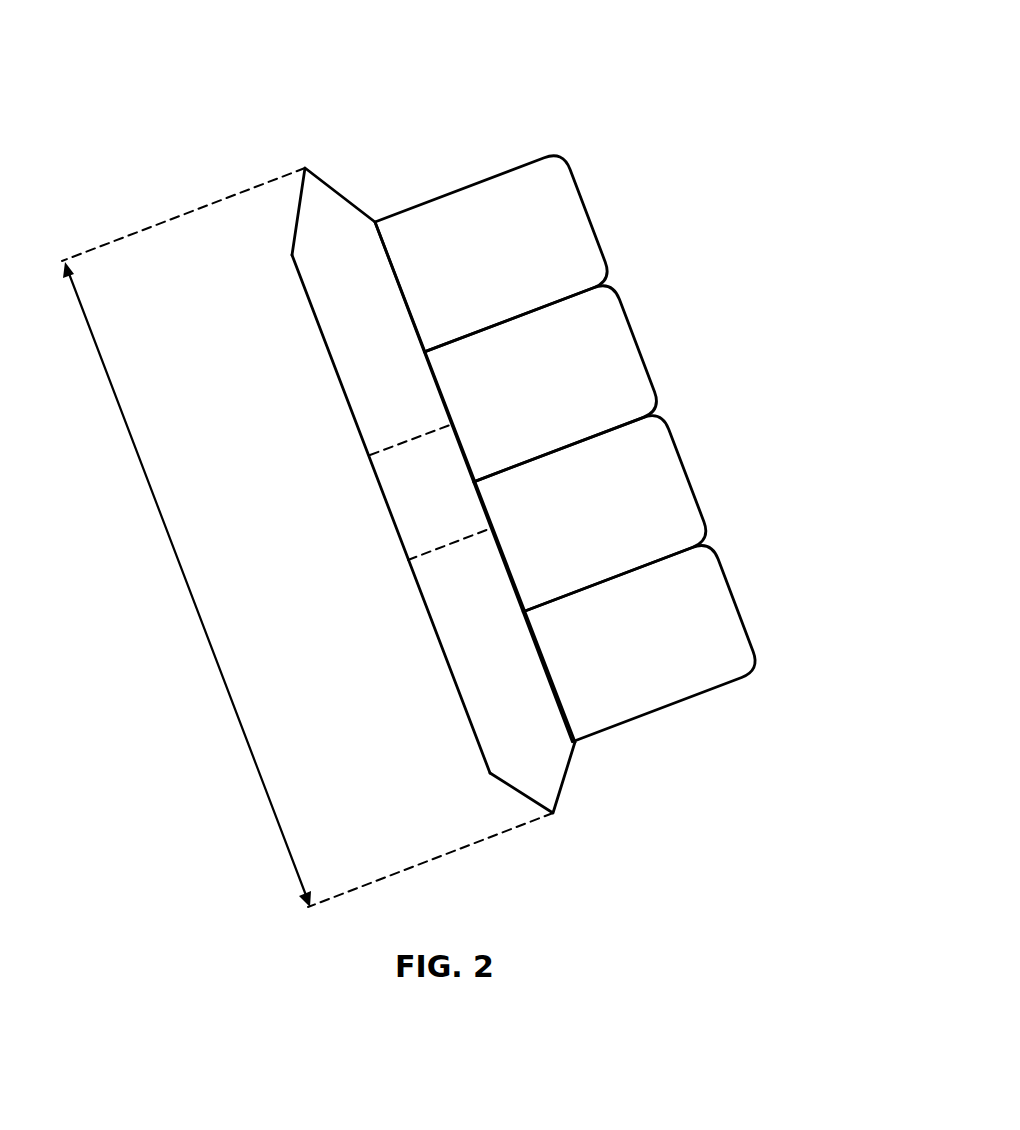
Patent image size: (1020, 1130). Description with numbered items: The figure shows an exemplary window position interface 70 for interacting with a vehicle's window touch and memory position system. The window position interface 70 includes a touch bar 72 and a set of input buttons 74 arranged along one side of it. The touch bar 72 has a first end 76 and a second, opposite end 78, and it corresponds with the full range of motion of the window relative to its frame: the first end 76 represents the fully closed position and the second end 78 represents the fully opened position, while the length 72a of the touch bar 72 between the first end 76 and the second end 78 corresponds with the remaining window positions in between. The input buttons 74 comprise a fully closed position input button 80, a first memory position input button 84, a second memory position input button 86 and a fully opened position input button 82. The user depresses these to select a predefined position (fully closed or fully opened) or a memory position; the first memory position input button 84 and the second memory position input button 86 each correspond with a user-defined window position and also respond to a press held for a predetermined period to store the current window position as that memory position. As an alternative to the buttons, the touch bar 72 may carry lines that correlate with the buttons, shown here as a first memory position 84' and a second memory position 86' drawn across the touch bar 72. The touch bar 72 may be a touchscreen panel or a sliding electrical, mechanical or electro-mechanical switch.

The window position interface 70 is at (641, 39).
The touch bar 72 is at (243, 299).
The length 72a is at (133, 445).
The input buttons 74 is at (759, 321).
The first end 76 is at (305, 168).
The second end 78 is at (553, 813).
The fully closed position input button 80 is at (592, 217).
The fully opened position input button 82 is at (737, 605).
The first memory position input button 84 is at (568, 384).
The first memory position 84' is at (369, 439).
The second memory position input button 86 is at (618, 514).
The second memory position 86' is at (408, 544).